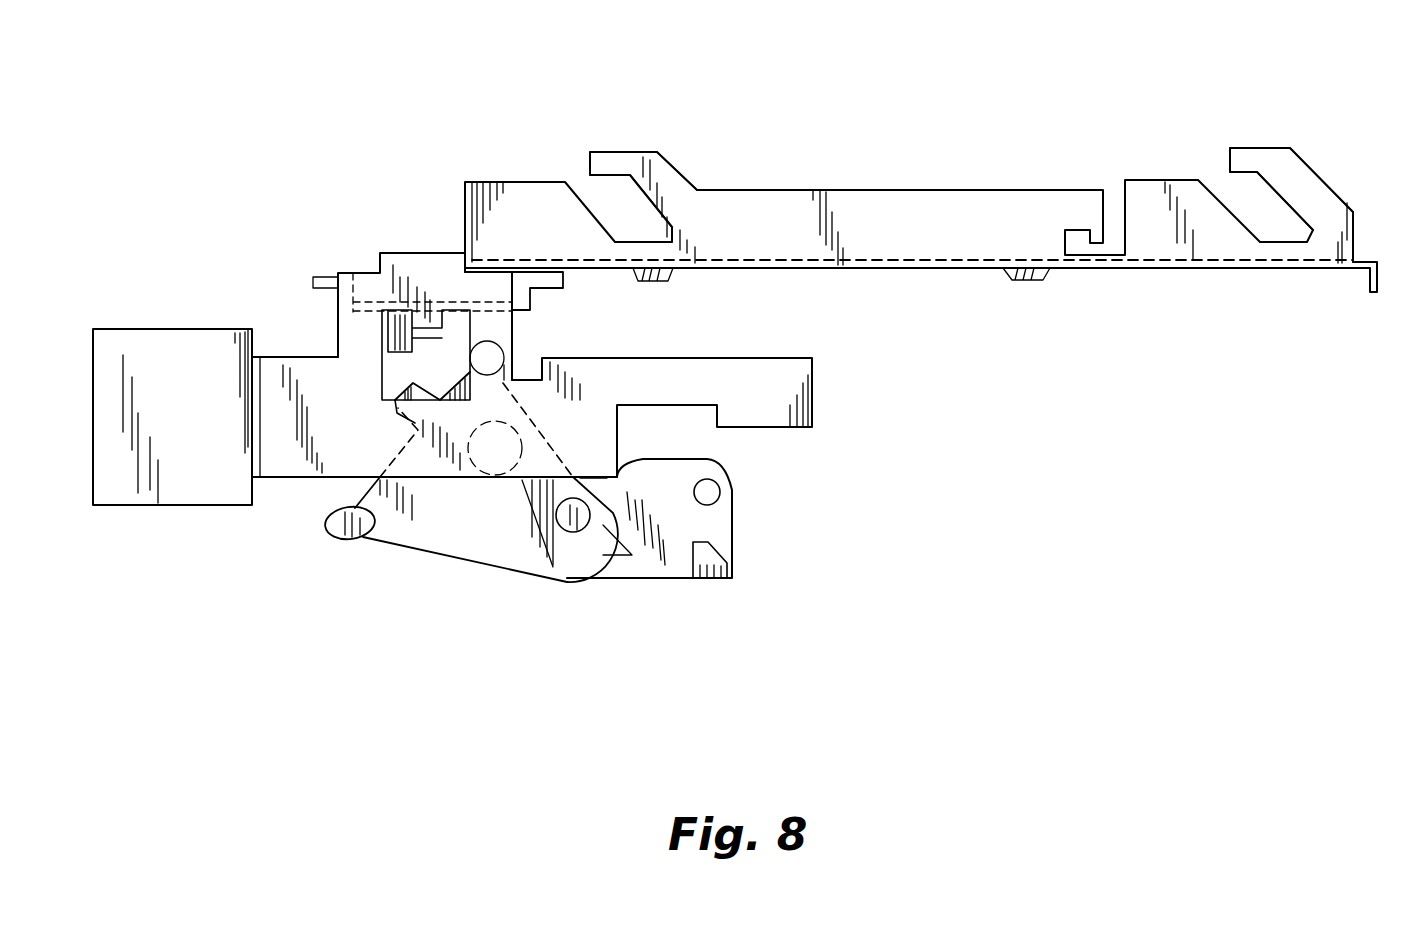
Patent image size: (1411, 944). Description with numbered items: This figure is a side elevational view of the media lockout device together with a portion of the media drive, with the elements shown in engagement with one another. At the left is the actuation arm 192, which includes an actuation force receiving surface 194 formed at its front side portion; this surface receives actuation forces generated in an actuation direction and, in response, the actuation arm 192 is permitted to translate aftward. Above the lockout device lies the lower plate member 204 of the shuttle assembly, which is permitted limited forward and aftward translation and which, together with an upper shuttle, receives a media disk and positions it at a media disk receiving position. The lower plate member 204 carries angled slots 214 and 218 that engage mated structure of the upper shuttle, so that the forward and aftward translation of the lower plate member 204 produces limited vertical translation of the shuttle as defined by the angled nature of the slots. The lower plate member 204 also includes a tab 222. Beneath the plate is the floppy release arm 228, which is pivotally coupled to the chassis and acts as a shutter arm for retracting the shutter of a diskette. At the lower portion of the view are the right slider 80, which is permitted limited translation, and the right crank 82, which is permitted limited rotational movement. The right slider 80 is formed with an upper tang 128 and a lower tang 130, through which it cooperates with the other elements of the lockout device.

The right slider 80 is at (652, 573).
The right crank 82 is at (473, 523).
The upper tang 128 is at (712, 492).
The lower tang 130 is at (713, 553).
The actuation arm 192 is at (330, 390).
The actuation force receiving surface 194 is at (190, 478).
The lower plate member 204 is at (853, 208).
The angled slot 214 is at (610, 200).
The angled slot 218 is at (1263, 208).
The tab 222 is at (433, 253).
The floppy release arm 228 is at (532, 285).